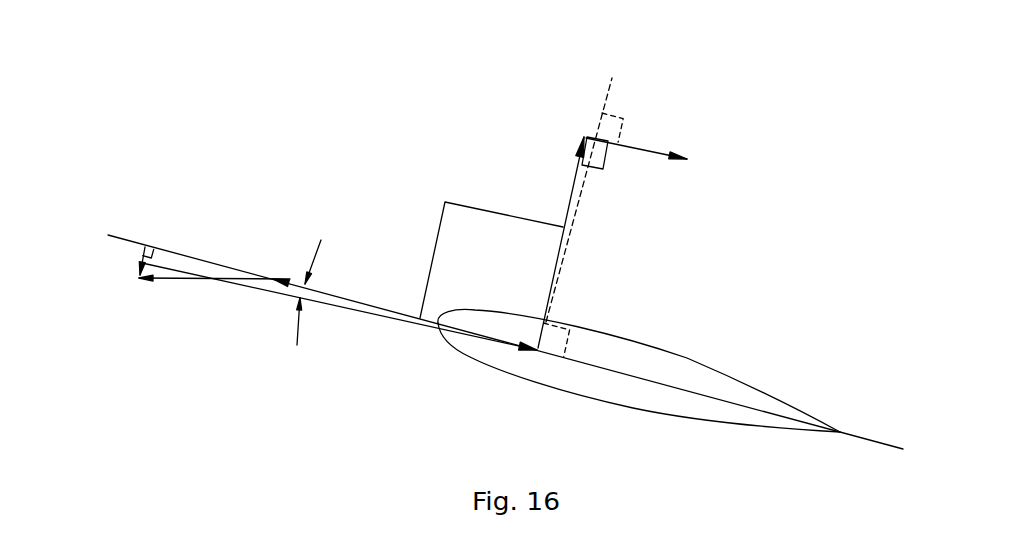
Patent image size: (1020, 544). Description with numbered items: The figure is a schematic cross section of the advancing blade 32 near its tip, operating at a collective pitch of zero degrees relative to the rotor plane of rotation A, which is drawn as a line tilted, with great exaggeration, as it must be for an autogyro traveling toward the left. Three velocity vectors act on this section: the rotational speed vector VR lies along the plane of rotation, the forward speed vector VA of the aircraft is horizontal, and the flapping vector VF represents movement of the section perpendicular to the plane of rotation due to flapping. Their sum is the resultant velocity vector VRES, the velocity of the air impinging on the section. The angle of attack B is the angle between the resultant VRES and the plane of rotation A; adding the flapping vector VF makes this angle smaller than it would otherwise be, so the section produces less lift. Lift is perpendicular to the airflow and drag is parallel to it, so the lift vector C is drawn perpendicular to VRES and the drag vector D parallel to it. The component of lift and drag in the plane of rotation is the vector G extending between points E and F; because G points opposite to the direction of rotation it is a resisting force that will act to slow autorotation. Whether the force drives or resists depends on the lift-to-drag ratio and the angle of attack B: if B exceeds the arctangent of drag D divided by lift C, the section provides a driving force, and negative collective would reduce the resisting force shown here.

The advancing blade 32 is at (687, 358).
The rotor plane of rotation A is at (861, 438).
The angle of attack B is at (325, 275).
The lift vector C is at (578, 188).
The drag vector D is at (600, 170).
The point E is at (597, 132).
The point F is at (686, 160).
The in-plane force vector G is at (606, 104).
The forward speed vector VA is at (158, 282).
The flapping velocity vector VF is at (138, 276).
The rotational speed vector VR is at (363, 303).
The resultant velocity vector VRES is at (392, 318).